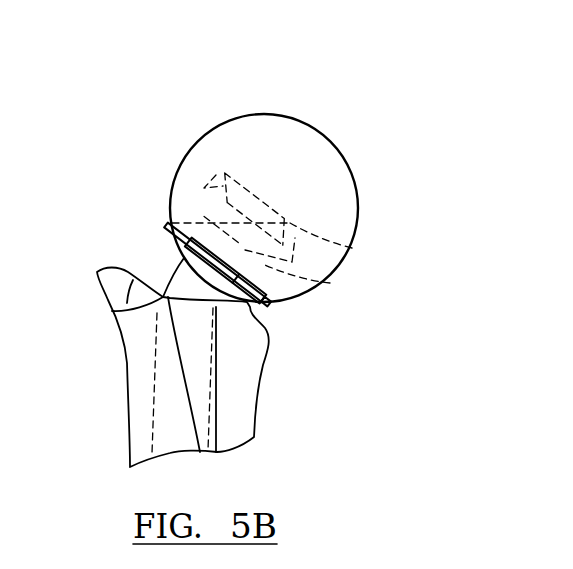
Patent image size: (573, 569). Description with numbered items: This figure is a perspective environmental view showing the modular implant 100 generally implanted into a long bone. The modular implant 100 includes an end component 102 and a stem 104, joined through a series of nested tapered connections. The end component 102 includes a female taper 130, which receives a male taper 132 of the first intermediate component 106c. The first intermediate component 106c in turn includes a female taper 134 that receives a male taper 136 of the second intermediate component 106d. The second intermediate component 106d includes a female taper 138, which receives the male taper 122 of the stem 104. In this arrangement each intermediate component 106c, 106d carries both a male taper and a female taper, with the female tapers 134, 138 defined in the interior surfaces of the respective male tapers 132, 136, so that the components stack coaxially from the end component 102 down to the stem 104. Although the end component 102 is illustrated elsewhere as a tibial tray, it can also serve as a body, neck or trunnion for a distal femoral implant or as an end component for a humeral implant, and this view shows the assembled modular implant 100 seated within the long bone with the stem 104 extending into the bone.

The modular implant 100 is at (88, 141).
The end component 102 is at (260, 109).
The stem 104 is at (120, 317).
The first intermediate component 106c is at (172, 223).
The second intermediate component 106d is at (290, 223).
The male taper 122 is at (187, 256).
The female taper 130 is at (216, 175).
The male taper 132 is at (352, 248).
The female taper 134 is at (172, 212).
The male taper 136 is at (330, 283).
The female taper 138 is at (279, 305).